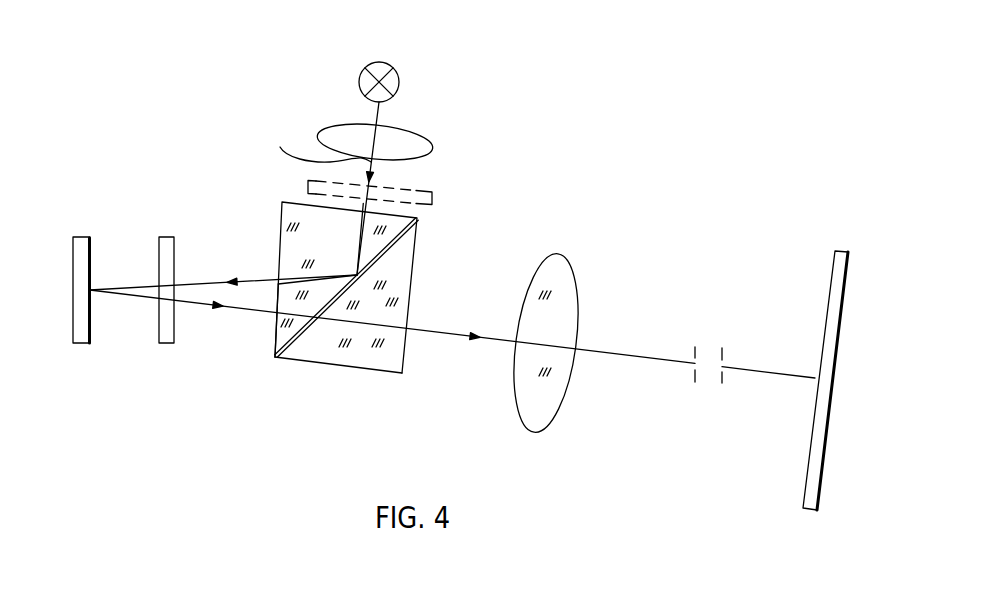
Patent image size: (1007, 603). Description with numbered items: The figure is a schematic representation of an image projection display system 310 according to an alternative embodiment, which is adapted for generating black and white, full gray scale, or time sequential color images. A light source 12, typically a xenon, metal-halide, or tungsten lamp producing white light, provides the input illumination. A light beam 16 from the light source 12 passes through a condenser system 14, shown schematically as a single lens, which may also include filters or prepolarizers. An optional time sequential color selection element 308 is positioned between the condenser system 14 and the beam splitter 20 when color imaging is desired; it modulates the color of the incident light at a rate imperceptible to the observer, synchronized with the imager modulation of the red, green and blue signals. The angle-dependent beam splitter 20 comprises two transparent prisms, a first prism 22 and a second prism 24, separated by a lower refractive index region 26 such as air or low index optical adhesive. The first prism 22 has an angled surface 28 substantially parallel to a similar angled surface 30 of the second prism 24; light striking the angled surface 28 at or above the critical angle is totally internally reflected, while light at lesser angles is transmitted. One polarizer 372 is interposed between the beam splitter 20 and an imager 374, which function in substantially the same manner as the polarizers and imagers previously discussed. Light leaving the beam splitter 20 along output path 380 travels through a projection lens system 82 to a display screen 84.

The light source 12 is at (399, 86).
The condenser system 14 is at (431, 147).
The light beam 16 is at (314, 148).
The time sequential color selection element 308 is at (308, 182).
The beam splitter 20 is at (375, 297).
The first prism 22 is at (287, 257).
The second prism 24 is at (342, 362).
The lower refractive index region 26 is at (285, 355).
The angled surface 28 is at (318, 313).
The angled surface 30 is at (358, 280).
The output light beam 380 is at (433, 333).
The polarizer 372 is at (165, 247).
The imager 374 is at (80, 242).
The projection lens system 82 is at (538, 422).
The display screen 84 is at (805, 510).
The image projection display system 310 is at (577, 128).